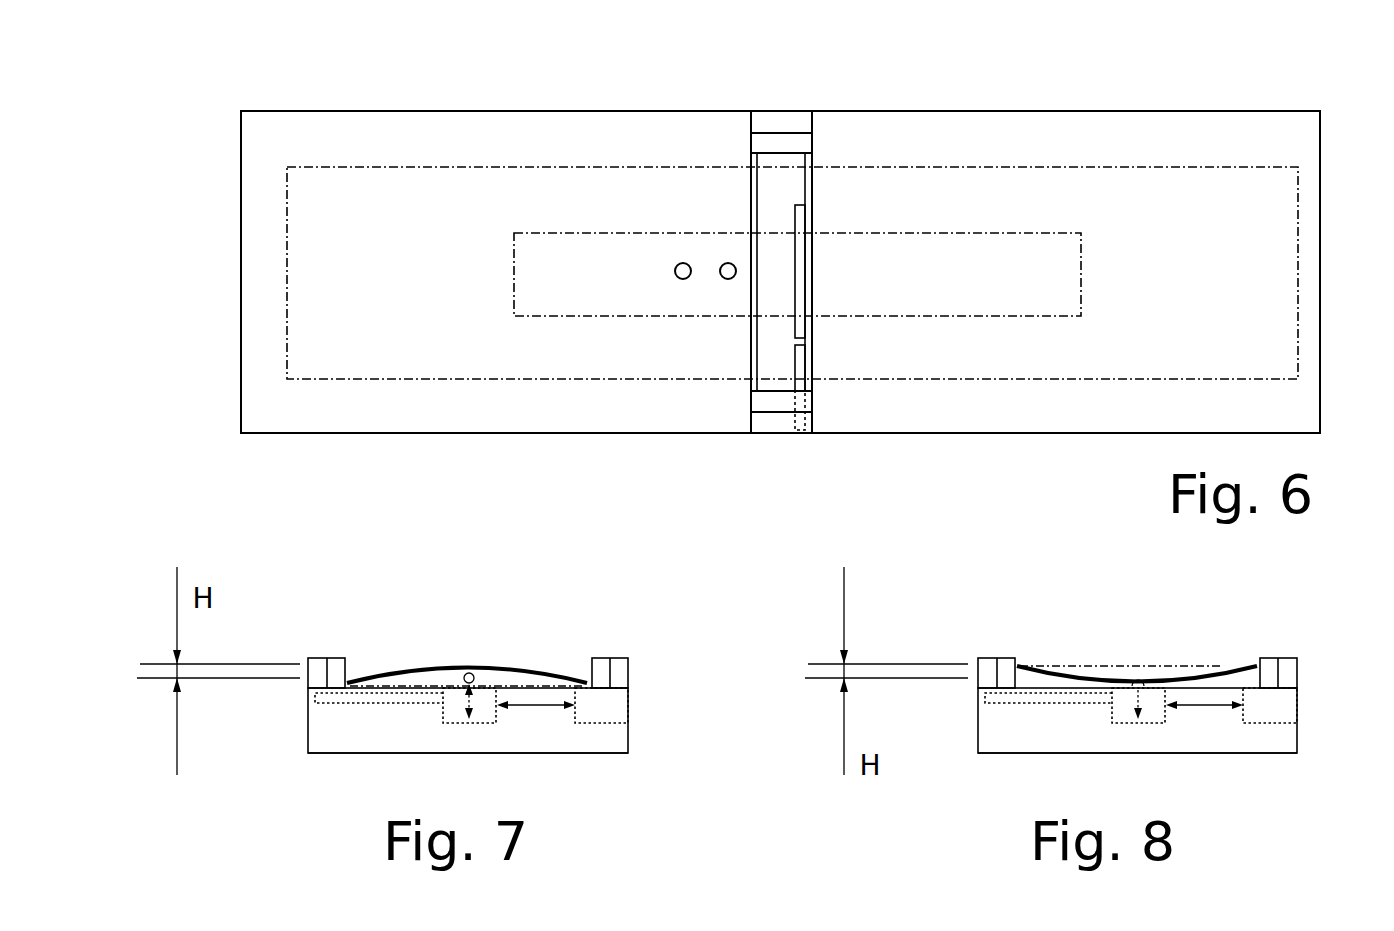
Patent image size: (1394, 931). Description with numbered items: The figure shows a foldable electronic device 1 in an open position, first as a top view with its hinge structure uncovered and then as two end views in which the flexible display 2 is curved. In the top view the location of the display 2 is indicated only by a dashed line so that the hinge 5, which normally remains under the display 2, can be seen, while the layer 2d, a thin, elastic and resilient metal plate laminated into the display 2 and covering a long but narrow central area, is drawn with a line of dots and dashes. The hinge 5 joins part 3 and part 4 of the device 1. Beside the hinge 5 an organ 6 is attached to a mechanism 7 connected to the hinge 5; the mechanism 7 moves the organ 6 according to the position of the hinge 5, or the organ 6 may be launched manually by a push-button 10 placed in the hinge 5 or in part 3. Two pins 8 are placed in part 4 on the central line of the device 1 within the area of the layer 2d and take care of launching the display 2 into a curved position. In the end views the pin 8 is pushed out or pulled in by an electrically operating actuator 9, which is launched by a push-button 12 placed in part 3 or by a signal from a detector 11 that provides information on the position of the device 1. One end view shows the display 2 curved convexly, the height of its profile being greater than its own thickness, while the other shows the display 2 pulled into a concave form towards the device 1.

In FIG. 6, the device 1 is at (400, 136).
In FIG. 7, the device 1 is at (364, 632).
In FIG. 8, the device 1 is at (1034, 632).
In FIG. 6, the display 2 is at (1118, 167).
In FIG. 7, the display 2 is at (532, 670).
In FIG. 8, the display 2 is at (1202, 670).
In FIG. 6, the layer 2d is at (957, 232).
In FIG. 6, the part 3 is at (1070, 437).
In FIG. 7, the part 3 is at (360, 735).
In FIG. 8, the part 3 is at (1030, 735).
In FIG. 6, the part 4 is at (537, 437).
In FIG. 6, the hinge 5 is at (779, 423).
In FIG. 7, the hinge 5 is at (625, 665).
In FIG. 8, the hinge 5 is at (1295, 665).
In FIG. 6, the organ 6 is at (805, 265).
In FIG. 6, the mechanism 7 is at (800, 353).
In FIG. 6, the pin 8 is at (683, 263).
In FIG. 7, the pin 8 is at (465, 672).
In FIG. 8, the pin 8 is at (1135, 680).
In FIG. 7, the actuator 9 is at (487, 715).
In FIG. 8, the actuator 9 is at (1157, 715).
In FIG. 6, the push-button 10 is at (798, 428).
In FIG. 7, the detector 11 is at (595, 712).
In FIG. 8, the detector 11 is at (1265, 712).
In FIG. 7, the push-button 12 is at (322, 690).
In FIG. 8, the push-button 12 is at (992, 690).